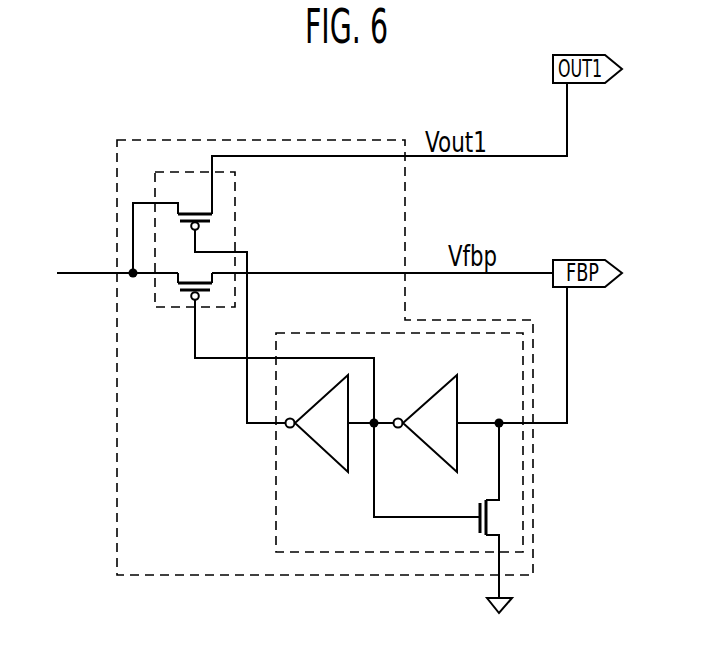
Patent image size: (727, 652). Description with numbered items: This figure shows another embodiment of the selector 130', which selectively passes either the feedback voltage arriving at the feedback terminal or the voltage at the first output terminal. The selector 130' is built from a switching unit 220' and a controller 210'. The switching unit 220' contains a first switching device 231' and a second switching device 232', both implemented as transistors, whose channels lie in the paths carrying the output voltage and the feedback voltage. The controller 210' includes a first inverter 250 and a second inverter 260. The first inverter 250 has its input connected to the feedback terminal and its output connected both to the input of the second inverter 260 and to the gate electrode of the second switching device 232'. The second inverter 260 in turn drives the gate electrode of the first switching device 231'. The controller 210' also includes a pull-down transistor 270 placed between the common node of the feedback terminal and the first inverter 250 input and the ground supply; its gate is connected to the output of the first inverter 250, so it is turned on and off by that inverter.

The selector 130' is at (325, 391).
The switching unit 220' is at (190, 199).
The controller 210' is at (399, 481).
The first switching device 231' is at (215, 306).
The second switching device 232' is at (276, 348).
The second inverter 260 is at (323, 448).
The first inverter 250 is at (432, 448).
The pull-down transistor 270 is at (488, 512).